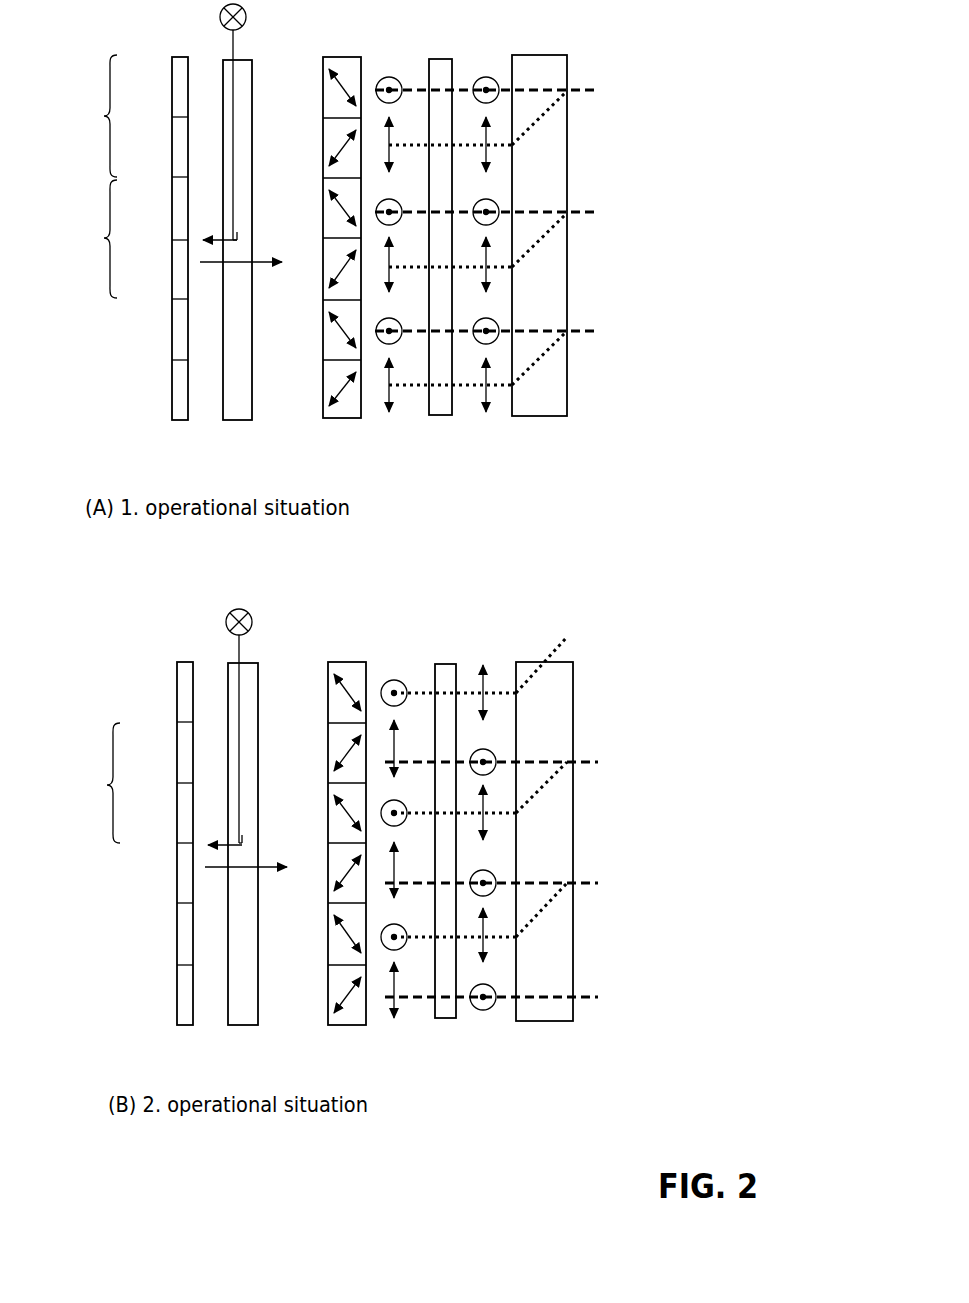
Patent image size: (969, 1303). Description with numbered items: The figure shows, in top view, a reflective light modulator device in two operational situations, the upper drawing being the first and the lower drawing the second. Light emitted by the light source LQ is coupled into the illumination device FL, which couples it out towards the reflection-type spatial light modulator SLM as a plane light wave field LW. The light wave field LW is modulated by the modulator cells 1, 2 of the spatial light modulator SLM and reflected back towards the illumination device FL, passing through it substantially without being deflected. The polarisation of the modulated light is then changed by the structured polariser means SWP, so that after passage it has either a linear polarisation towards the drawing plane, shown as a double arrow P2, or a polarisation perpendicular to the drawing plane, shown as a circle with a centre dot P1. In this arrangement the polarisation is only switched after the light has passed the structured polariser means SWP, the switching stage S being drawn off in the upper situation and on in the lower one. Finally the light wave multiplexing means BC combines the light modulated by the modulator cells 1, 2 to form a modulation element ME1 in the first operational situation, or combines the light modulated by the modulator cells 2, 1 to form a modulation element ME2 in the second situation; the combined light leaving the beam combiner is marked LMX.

The modulator cell 1 is at (183, 95).
The modulator cell 2 is at (183, 158).
The modulation element ME1 is at (87, 176).
The modulation element ME2 is at (90, 783).
The spatial light modulator SLM is at (183, 556).
The illumination device FL is at (241, 557).
The light source LQ is at (246, 22).
The light wave field LW is at (205, 238).
The structured polariser means SWP is at (345, 555).
The switch (polarization switch) S is at (433, 59).
The light wave multiplexing means BC is at (542, 554).
The polarisation perpendicular to the drawing plane P1 is at (383, 84).
The polarisation towards the drawing plane P2 is at (391, 147).
The light of multiplexed modulator cells LMX is at (580, 90).